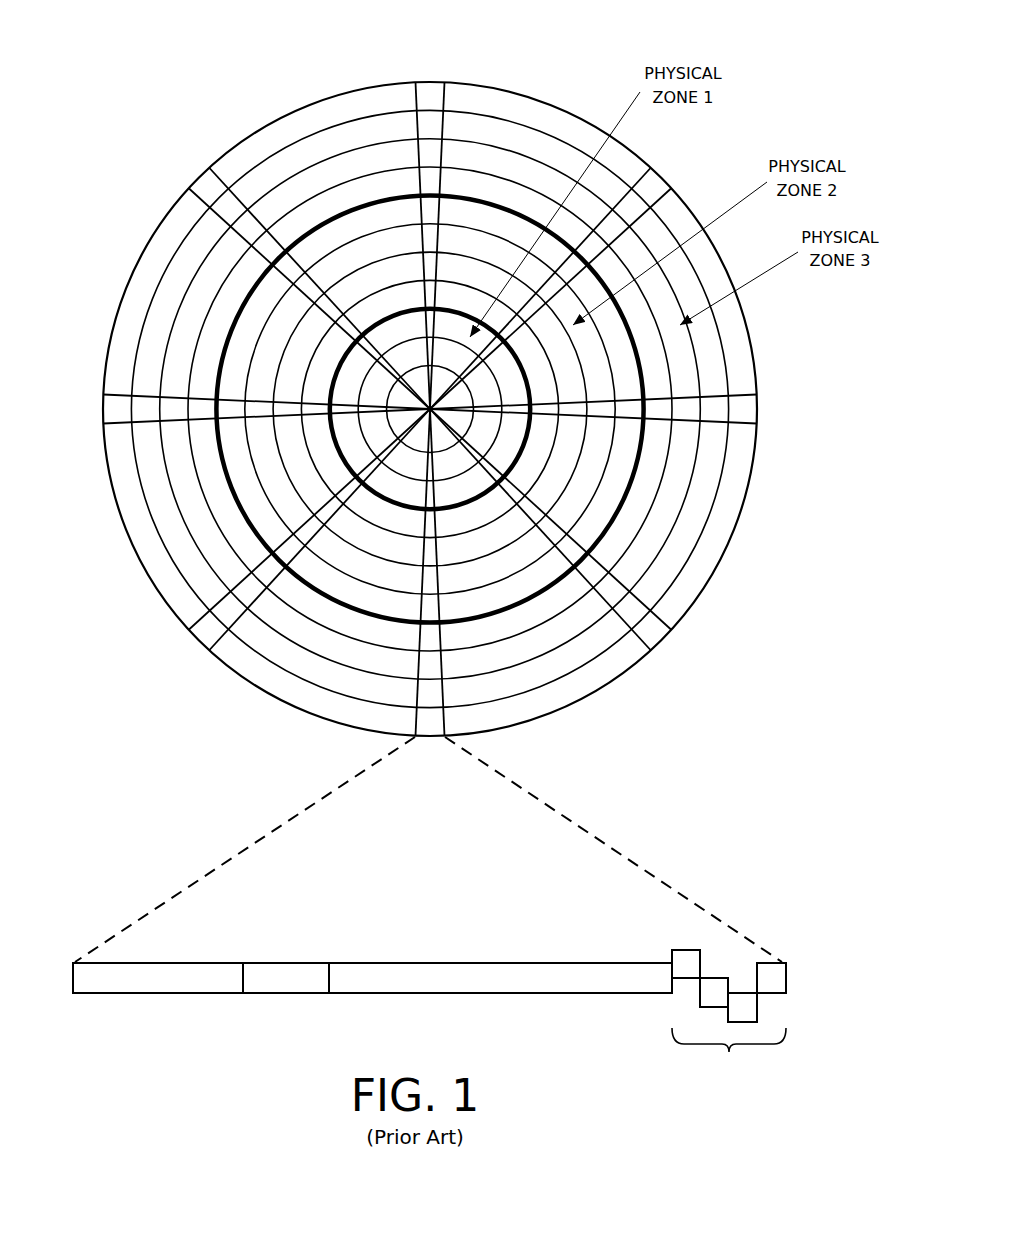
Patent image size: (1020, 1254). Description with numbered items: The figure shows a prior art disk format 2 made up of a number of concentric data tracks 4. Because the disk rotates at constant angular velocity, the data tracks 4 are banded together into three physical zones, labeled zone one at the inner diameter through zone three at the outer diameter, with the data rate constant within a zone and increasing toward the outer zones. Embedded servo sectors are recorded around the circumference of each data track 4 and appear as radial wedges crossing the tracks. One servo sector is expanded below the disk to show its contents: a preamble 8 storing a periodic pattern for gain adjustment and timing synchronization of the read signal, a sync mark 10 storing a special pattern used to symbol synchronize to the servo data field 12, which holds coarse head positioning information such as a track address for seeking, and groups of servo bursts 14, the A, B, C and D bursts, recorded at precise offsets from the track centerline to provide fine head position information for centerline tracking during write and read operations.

The disk format 2 is at (431, 420).
The data track 4 is at (563, 132).
The preamble 8 is at (140, 994).
The sync mark 10 is at (285, 994).
The servo data field 12 is at (490, 994).
The servo bursts 14 is at (660, 930).